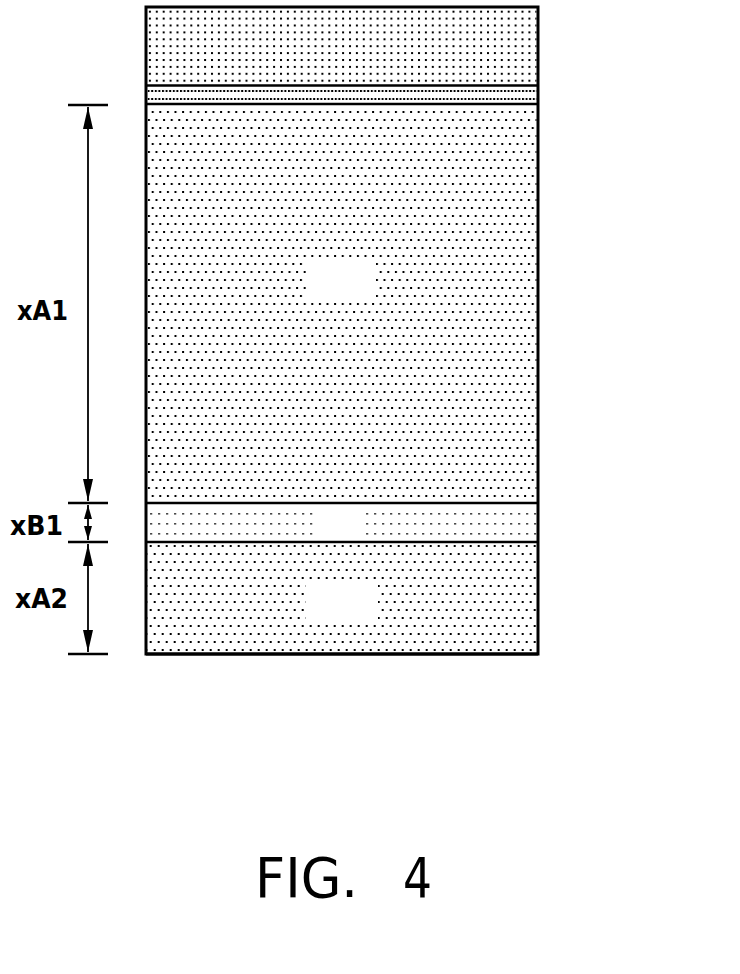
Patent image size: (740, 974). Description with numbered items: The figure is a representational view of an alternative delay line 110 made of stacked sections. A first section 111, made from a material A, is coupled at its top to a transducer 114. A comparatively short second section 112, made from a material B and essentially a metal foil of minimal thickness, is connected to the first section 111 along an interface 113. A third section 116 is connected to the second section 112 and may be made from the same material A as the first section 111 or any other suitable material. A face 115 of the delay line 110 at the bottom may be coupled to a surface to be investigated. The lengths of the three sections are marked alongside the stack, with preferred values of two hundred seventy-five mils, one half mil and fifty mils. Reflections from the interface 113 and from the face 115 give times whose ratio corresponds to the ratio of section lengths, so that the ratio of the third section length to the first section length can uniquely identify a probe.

The delay line 110 is at (541, 359).
The first section 111 is at (472, 242).
The second section 112 is at (520, 523).
The interface 113 is at (422, 501).
The transducer 114 is at (540, 93).
The face 115 is at (350, 657).
The third section 116 is at (489, 605).